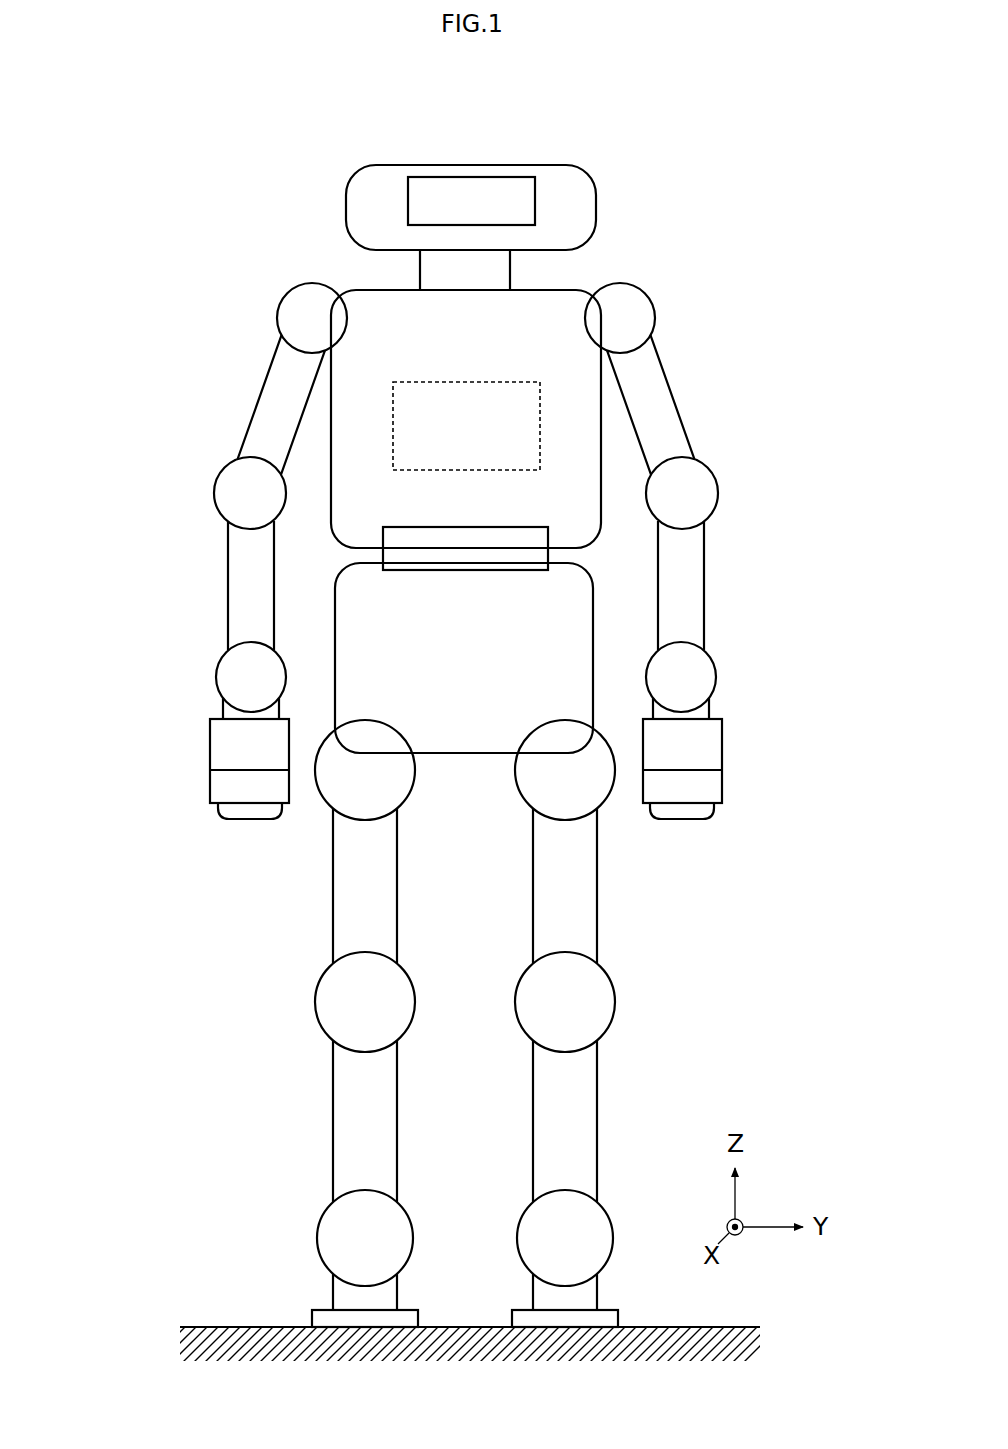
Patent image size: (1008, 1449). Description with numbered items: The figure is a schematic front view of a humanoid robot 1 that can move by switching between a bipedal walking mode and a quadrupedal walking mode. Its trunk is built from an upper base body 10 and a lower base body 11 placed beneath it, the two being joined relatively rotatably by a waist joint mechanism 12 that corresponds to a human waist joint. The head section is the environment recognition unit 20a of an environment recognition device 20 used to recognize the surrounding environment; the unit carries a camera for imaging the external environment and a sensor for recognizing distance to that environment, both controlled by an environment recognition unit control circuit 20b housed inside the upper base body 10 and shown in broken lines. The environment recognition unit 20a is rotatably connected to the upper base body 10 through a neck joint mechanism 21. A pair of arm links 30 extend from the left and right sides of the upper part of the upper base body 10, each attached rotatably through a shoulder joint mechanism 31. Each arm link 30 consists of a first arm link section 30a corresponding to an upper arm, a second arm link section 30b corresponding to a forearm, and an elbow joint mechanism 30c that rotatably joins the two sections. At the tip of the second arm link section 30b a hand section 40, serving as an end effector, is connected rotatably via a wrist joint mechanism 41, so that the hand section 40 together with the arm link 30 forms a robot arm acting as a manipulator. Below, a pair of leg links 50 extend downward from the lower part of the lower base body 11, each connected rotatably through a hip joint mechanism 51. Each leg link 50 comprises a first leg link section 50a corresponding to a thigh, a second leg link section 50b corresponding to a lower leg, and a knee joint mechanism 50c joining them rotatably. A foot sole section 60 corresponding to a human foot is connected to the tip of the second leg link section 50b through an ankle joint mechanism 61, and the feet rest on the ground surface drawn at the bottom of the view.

The robot 1 is at (688, 82).
The upper base body 10 is at (580, 490).
The lower base body 11 is at (566, 637).
The waist joint mechanism 12 is at (530, 557).
The environment recognition device 20 is at (577, 138).
The environment recognition unit 20a is at (587, 190).
The environment recognition unit control circuit 20b is at (478, 382).
The neck joint mechanism 21 is at (497, 272).
The arm link 30 is at (138, 428).
The first arm link section 30a is at (262, 405).
The second arm link section 30b is at (232, 558).
The elbow joint mechanism 30c is at (237, 490).
The shoulder joint mechanism 31 is at (292, 311).
The hand section 40 is at (222, 760).
The wrist joint mechanism 41 is at (232, 685).
The leg link 50 is at (228, 935).
The first leg link section 50a is at (340, 918).
The second leg link section 50b is at (340, 1063).
The knee joint mechanism 50c is at (330, 1006).
The hip joint mechanism 51 is at (335, 793).
The foot sole section 60 is at (320, 1308).
The ankle joint mechanism 61 is at (337, 1228).